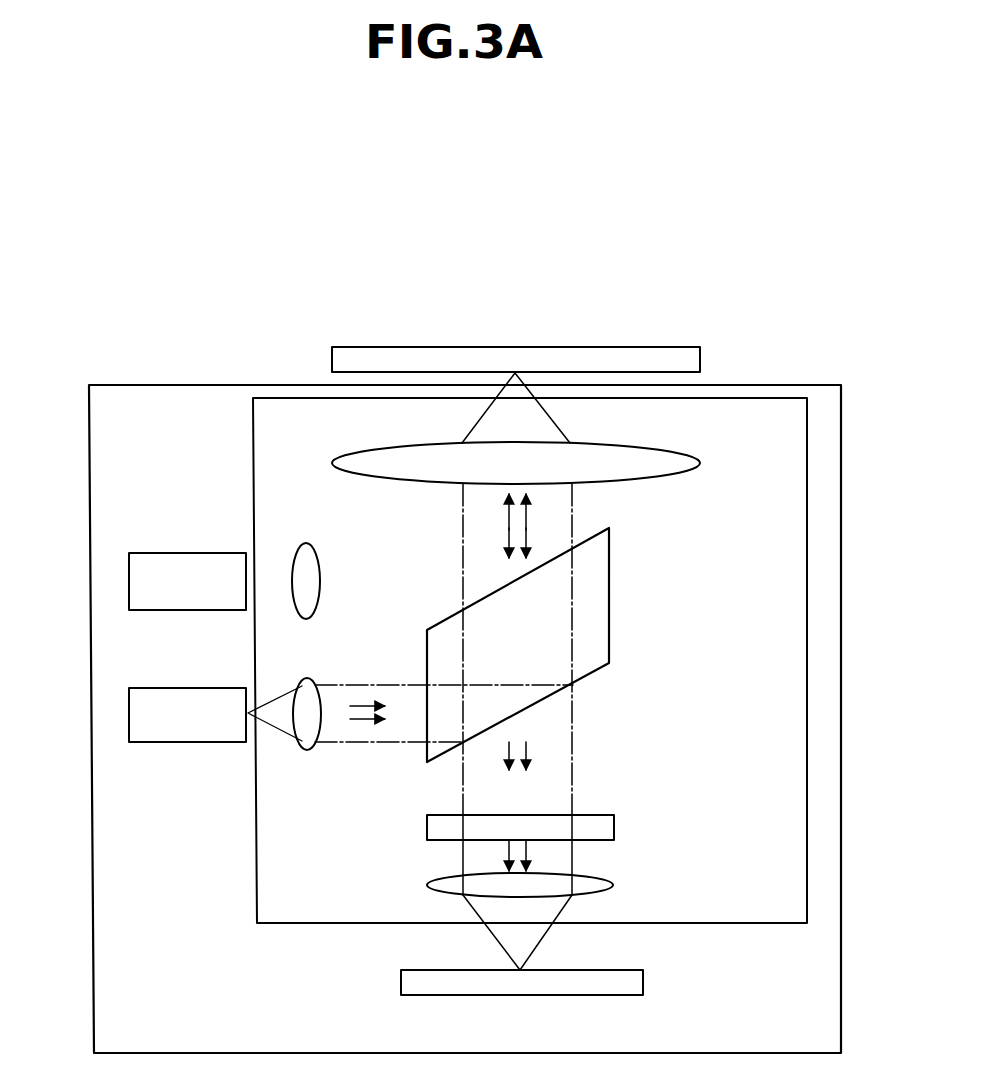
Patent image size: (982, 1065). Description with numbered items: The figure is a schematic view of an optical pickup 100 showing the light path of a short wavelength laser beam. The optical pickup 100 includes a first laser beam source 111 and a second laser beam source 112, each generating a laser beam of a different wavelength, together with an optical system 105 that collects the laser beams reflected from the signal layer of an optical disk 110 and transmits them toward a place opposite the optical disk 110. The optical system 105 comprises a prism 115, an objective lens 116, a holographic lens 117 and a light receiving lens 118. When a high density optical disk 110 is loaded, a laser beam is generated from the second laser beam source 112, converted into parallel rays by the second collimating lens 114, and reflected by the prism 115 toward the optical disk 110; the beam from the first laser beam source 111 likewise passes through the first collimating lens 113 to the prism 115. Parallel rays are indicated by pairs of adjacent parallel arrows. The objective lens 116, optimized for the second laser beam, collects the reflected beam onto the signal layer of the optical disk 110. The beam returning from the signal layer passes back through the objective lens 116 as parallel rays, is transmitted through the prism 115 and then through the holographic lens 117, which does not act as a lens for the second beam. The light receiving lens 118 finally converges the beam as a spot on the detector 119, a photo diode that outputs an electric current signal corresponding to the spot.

The optical pickup 100 is at (100, 385).
The optical system 105 is at (253, 890).
The optical disk 110 is at (585, 348).
The first laser beam source 111 is at (185, 565).
The second laser beam source 112 is at (205, 735).
The first collimating lens 113 is at (310, 545).
The second collimating lens 114 is at (307, 750).
The prism 115 is at (610, 610).
The objective lens 116 is at (675, 465).
The holographic lens 117 is at (600, 815).
The light receiving lens 118 is at (600, 878).
The detector 119 is at (624, 970).